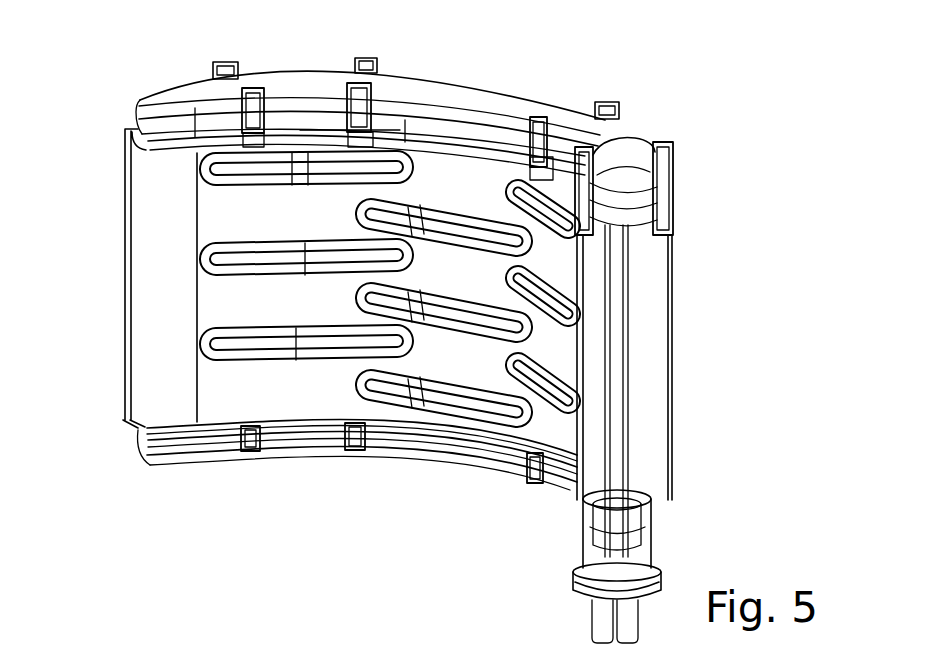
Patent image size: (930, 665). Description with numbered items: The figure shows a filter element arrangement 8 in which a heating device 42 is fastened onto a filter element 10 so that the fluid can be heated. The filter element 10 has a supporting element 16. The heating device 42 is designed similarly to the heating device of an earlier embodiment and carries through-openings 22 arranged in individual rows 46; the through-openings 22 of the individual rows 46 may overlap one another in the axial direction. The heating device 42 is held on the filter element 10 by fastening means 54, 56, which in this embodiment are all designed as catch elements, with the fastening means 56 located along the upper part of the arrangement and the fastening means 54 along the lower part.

The filter element arrangement 8 is at (401, 325).
The filter element 10 is at (350, 280).
The supporting element 16 is at (285, 252).
The through-openings 22 is at (315, 333).
The heating device 42 is at (145, 246).
The rows 46 is at (332, 385).
The fastening means 54 is at (262, 452).
The fastening means 56 is at (345, 100).